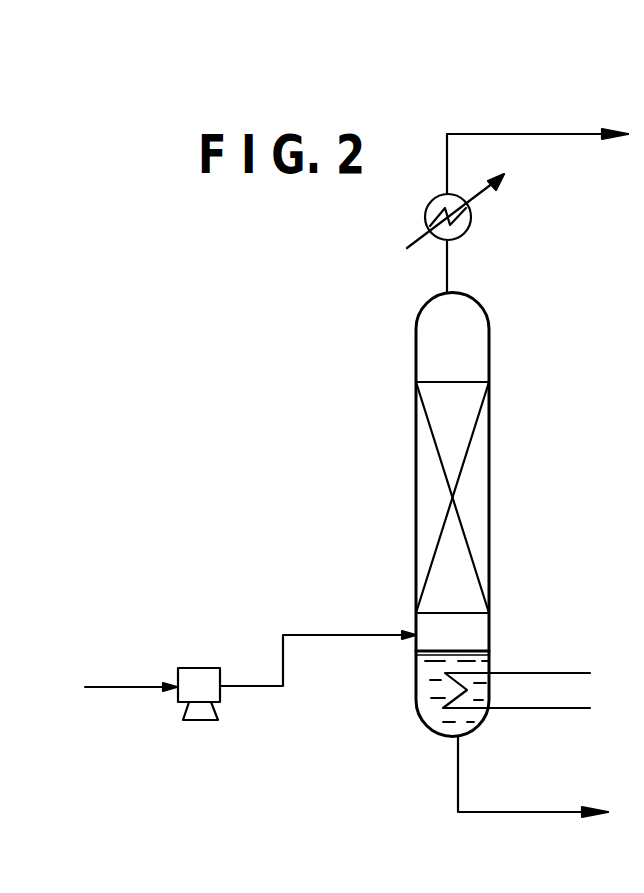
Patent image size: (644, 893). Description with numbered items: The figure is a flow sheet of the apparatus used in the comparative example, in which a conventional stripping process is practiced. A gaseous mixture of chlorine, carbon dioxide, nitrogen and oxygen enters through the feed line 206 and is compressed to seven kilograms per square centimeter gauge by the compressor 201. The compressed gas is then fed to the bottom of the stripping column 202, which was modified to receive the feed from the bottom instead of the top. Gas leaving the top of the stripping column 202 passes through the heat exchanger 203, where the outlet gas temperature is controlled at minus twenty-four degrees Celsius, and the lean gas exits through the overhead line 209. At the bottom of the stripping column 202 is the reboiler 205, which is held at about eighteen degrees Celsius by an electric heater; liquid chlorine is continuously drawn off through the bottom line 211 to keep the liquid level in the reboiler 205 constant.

The compressor 201 is at (190, 690).
The stripping column 202 is at (478, 495).
The heat exchanger 203 is at (470, 230).
The reboiler 205 is at (560, 672).
The feed line 206 is at (127, 687).
The overhead product line 209 is at (544, 134).
The bottoms product line 211 is at (538, 812).